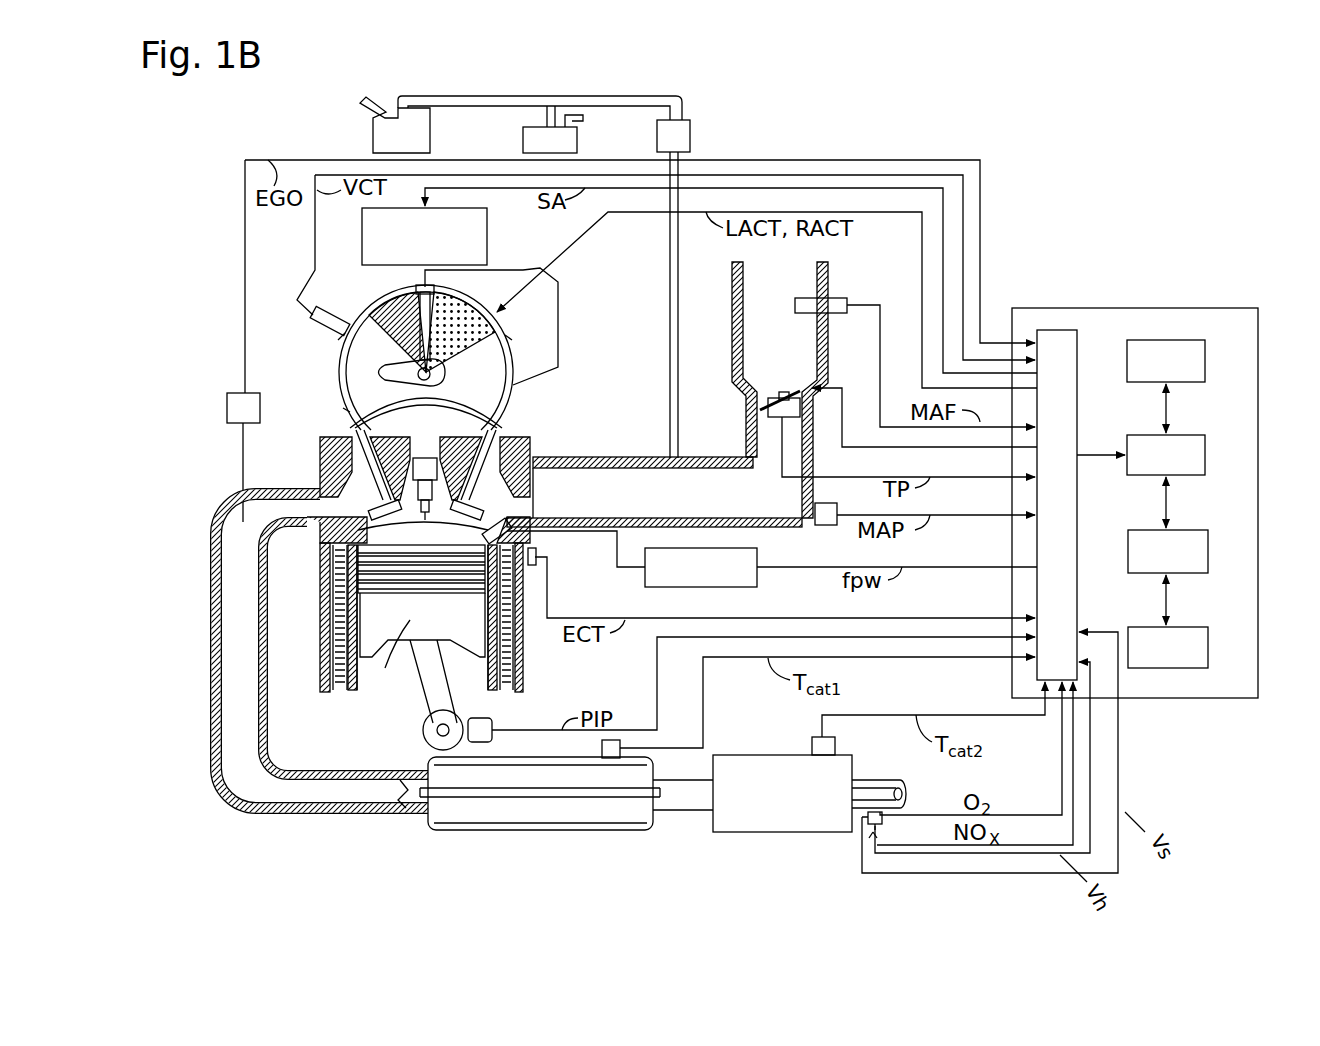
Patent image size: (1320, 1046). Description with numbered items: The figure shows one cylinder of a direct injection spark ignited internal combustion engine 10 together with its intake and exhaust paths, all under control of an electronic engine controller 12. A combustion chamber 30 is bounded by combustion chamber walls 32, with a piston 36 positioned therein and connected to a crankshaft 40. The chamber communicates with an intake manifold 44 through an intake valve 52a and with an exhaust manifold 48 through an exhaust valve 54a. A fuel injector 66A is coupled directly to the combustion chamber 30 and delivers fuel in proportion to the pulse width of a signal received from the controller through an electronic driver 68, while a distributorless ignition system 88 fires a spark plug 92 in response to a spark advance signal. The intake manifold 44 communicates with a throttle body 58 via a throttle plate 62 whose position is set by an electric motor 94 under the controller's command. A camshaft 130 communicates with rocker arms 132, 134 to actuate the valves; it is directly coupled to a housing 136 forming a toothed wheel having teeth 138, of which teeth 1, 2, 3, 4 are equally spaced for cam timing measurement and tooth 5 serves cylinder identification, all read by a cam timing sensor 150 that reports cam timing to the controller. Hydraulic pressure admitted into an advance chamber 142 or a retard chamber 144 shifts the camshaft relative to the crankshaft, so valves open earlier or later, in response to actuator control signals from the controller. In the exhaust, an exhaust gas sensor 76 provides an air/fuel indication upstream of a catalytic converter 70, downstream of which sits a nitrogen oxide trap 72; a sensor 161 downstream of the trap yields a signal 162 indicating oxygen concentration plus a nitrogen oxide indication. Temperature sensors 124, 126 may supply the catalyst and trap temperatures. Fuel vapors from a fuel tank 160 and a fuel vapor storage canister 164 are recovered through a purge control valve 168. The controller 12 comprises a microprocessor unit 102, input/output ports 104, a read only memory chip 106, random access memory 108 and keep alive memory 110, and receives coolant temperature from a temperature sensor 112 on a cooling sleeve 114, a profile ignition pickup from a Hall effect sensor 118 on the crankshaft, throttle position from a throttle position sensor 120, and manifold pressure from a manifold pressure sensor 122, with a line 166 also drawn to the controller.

The tooth 1 is at (417, 289).
The tooth 2 is at (504, 338).
The tooth 3 is at (458, 456).
The tooth 4 is at (343, 410).
The tooth 5 is at (341, 336).
The internal combustion engine 10 is at (570, 377).
The electronic engine controller 12 is at (1215, 308).
The combustion chamber 30 is at (320, 602).
The combustion chamber walls 32 is at (360, 690).
The piston 36 is at (421, 620).
The crankshaft 40 is at (427, 735).
The intake manifold 44 is at (654, 492).
The exhaust manifold 48 is at (228, 528).
The intake valve 52a is at (483, 510).
The exhaust valve 54a is at (363, 510).
The throttle body 58 is at (763, 452).
The throttle plate 62 is at (766, 398).
The fuel injector 66A is at (523, 517).
The electronic driver 68 is at (716, 588).
The catalytic converter 70 is at (490, 758).
The NOx trap 72 is at (742, 757).
The exhaust gas sensor 76 is at (253, 393).
The distributorless ignition system 88 is at (488, 240).
The spark plug 92 is at (418, 458).
The electric motor 94 is at (790, 386).
The microprocessor unit 102 is at (1182, 435).
The input/output ports 104 is at (1078, 370).
The read only memory chip 106 is at (1182, 340).
The random access memory 108 is at (1182, 530).
The keep alive memory 110 is at (1182, 627).
The temperature sensor 112 is at (537, 556).
The cooling sleeve 114 is at (527, 663).
The Hall effect sensor 118 is at (484, 720).
The throttle position sensor 120 is at (748, 418).
The manifold pressure sensor 122 is at (815, 528).
The temperature sensor 124 is at (602, 748).
The temperature sensor 126 is at (838, 750).
The camshaft 130 is at (400, 363).
The rocker arm 132 is at (347, 427).
The rocker arm 134 is at (517, 427).
The housing 136 is at (340, 390).
The teeth 138 is at (528, 312).
The advance chamber 142 is at (452, 300).
The retard chamber 144 is at (392, 300).
The cam timing sensor 150 is at (316, 325).
The fuel tank 160 is at (432, 141).
The sensor 161 is at (873, 833).
The signal 162 is at (1062, 780).
The fuel vapor storage canister 164 is at (578, 143).
The sensor heater line 166 is at (1008, 752).
The purge control valve 168 is at (691, 141).